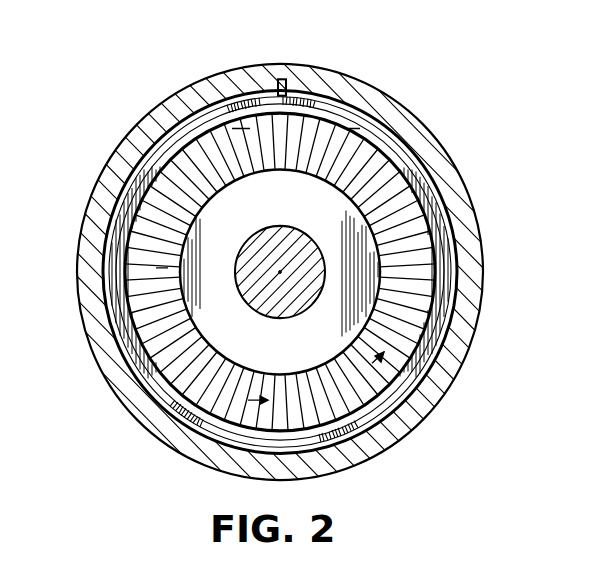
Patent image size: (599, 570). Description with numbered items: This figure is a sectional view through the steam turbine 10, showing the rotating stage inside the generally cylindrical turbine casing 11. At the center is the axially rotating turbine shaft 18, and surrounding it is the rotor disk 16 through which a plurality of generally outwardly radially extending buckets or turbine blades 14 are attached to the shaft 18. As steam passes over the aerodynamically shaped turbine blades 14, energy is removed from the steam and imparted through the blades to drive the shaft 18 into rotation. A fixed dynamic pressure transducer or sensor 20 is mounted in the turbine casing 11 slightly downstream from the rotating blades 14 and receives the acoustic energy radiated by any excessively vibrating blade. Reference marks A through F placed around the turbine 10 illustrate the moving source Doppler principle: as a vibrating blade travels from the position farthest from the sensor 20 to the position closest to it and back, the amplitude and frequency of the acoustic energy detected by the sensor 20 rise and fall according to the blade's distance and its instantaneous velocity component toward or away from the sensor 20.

The steam turbine 10 is at (266, 285).
The turbine casing 11 is at (280, 285).
The turbine blades 14 is at (264, 272).
The rotor disk 16 is at (272, 272).
The turbine shaft 18 is at (280, 271).
The dynamic pressure transducer or sensor 20 is at (260, 66).